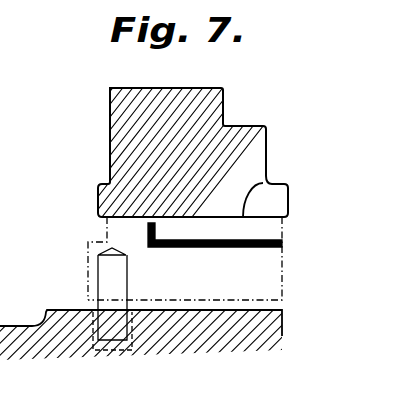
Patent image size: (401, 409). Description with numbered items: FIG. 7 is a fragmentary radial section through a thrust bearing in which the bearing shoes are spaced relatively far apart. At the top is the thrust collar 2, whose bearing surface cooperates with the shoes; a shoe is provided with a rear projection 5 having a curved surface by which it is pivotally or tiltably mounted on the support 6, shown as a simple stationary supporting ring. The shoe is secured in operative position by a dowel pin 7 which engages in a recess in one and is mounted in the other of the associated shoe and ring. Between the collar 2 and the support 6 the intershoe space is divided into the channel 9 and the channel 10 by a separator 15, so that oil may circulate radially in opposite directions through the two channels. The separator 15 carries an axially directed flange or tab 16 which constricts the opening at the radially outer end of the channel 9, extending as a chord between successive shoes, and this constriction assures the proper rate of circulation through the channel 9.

The thrust collar 2 is at (237, 140).
The rear projection 5 is at (268, 180).
The support 6 is at (285, 315).
The dowel pin 7 is at (95, 268).
The channel 9 is at (269, 231).
The channel 10 is at (268, 276).
The separator 15 is at (256, 252).
The flange or tab 16 is at (141, 233).